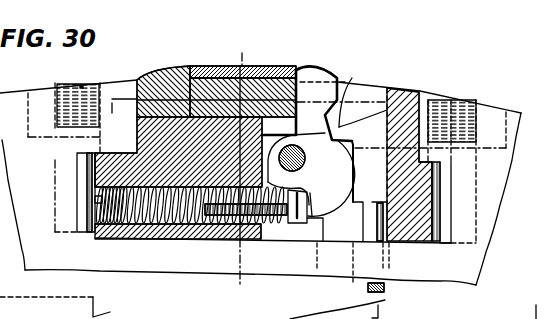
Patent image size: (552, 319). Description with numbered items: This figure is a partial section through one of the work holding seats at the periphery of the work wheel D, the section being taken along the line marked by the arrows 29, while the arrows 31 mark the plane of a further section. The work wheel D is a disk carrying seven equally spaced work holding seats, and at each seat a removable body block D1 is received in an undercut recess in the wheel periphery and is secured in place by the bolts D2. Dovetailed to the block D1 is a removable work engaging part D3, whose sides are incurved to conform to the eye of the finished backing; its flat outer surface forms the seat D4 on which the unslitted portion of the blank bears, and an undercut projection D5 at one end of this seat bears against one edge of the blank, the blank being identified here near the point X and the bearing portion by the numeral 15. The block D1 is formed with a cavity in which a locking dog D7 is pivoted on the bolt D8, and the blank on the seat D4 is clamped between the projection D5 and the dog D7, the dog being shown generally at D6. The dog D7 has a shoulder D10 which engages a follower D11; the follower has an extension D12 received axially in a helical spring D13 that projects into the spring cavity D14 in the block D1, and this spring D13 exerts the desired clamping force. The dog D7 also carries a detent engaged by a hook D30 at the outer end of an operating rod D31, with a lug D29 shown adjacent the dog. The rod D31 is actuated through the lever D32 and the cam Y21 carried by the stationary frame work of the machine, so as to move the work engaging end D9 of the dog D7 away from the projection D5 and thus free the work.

The work wheel D is at (468, 268).
The body block D1 is at (405, 252).
The bolts D2 is at (501, 222).
The work engaging part D3 is at (143, 79).
The seat D4 is at (217, 66).
The undercut projection D5 is at (184, 67).
The cam lever D6 is at (353, 131).
The locking dog D7 is at (356, 90).
The bolt D8 is at (306, 160).
The work engaging end D9 is at (306, 73).
The shoulder D10 is at (314, 241).
The follower D11 is at (323, 227).
The extension D12 is at (212, 246).
The helical spring D13 is at (269, 226).
The spring cavity D14 is at (140, 236).
The lug D29 is at (349, 147).
The hook D30 is at (418, 92).
The operating rod D31 is at (11, 263).
The lever D32 is at (413, 301).
The cam surface 15 is at (301, 70).
The point X is at (291, 54).
The section line 29- 29 is at (242, 53).
The section line 31- 31 is at (28, 92).
The cam Y21 is at (80, 307).